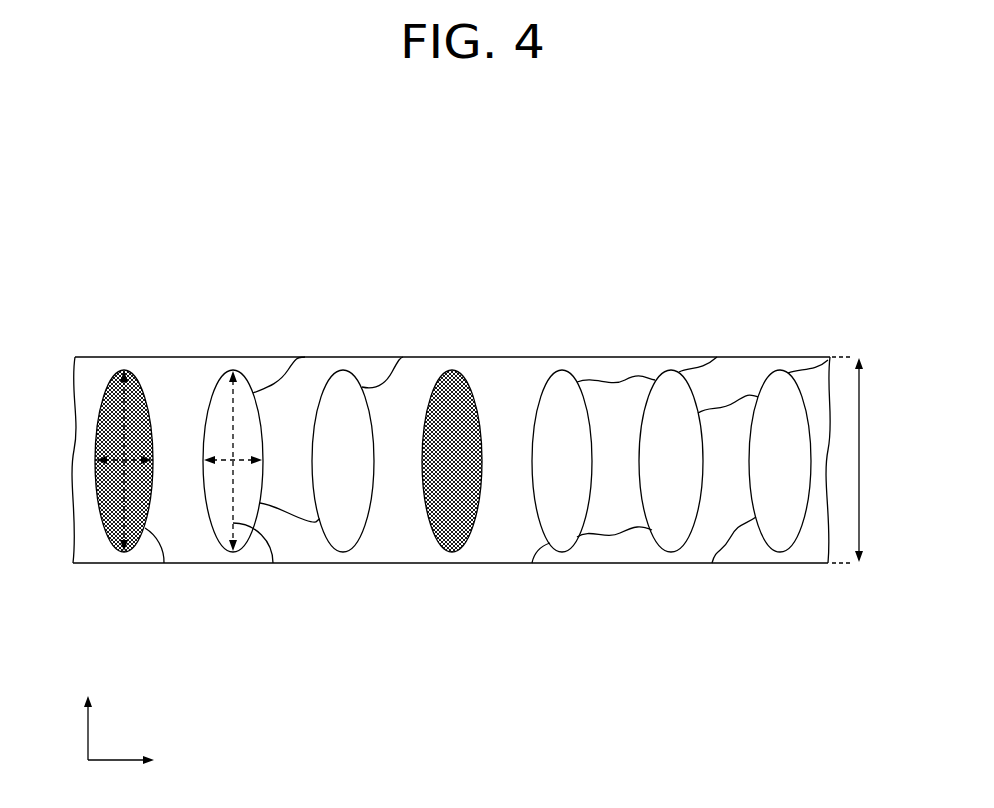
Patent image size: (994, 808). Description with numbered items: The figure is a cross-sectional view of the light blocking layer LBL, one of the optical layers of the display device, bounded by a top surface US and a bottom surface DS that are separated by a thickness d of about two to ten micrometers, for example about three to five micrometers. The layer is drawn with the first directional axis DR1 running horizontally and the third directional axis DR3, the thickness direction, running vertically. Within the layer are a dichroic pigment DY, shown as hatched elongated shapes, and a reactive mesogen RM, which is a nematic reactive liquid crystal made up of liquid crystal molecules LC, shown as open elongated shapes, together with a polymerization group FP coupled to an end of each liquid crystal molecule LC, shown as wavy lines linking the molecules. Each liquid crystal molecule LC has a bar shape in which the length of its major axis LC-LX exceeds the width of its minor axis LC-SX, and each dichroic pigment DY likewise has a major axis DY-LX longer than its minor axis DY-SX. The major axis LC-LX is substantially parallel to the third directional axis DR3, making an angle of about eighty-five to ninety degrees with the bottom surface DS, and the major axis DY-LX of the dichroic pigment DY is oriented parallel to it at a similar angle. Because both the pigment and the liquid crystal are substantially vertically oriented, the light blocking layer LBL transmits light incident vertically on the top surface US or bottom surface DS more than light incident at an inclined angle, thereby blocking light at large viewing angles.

The light blocking layer LBL is at (748, 261).
The top surface US is at (760, 357).
The bottom surface DS is at (760, 563).
The thickness d is at (856, 460).
The reactive mesogen RM is at (540, 403).
The liquid crystal molecule LC is at (345, 378).
The polymerization group FP is at (335, 293).
The dichroic pigment DY is at (456, 378).
The major axis of the dichroic pigment DY-LX is at (124, 397).
The minor axis of the dichroic pigment DY-SX is at (120, 463).
The major axis of the liquid crystal molecule LC-LX is at (233, 397).
The minor axis of the liquid crystal molecule LC-SX is at (228, 466).
The third directional axis DR3 is at (89, 714).
The first directional axis DR1 is at (143, 761).